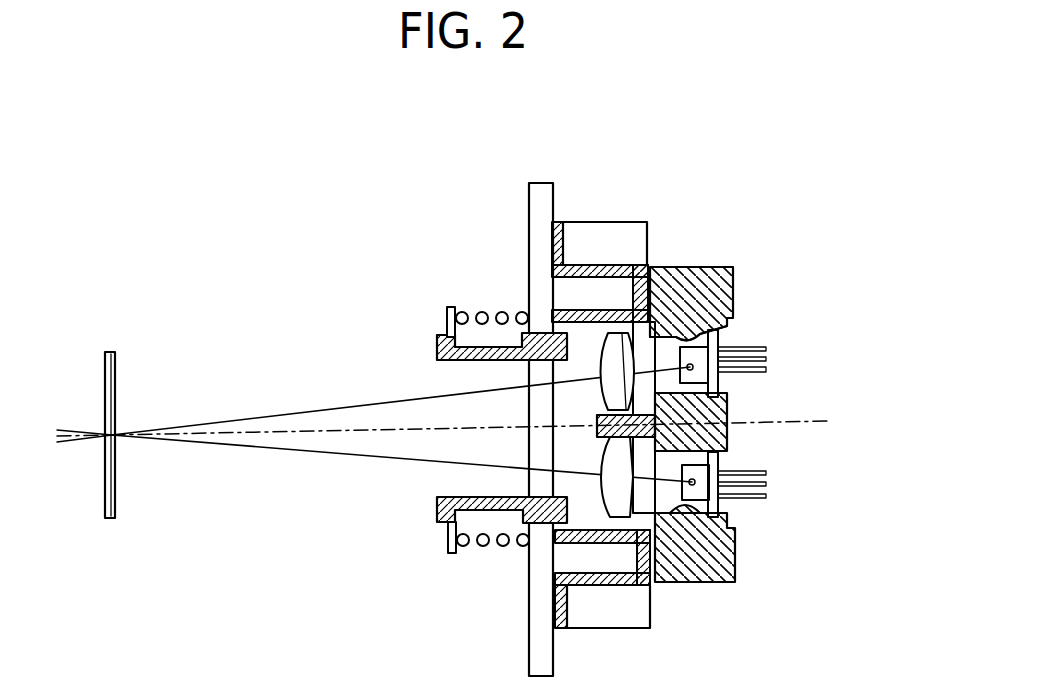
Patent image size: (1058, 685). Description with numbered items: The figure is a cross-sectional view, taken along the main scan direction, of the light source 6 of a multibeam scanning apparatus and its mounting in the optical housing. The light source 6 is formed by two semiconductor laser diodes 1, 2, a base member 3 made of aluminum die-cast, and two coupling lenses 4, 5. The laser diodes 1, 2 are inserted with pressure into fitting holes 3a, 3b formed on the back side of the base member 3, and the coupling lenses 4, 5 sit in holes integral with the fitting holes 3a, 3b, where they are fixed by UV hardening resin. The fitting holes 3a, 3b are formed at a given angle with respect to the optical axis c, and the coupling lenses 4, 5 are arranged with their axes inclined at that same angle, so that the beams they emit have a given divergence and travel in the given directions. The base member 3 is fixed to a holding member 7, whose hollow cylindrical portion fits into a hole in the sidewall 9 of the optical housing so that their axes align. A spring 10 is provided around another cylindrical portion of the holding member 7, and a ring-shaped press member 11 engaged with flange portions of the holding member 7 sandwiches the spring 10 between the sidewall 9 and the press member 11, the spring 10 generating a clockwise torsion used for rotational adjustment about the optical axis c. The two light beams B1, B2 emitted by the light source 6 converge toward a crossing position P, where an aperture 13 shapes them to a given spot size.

The semiconductor laser diode 1 is at (718, 347).
The semiconductor laser diode 2 is at (712, 470).
The base member 3 is at (715, 272).
The fitting hole 3a is at (696, 315).
The fitting hole 3b is at (737, 540).
The coupling lens 4 is at (625, 332).
The coupling lens 5 is at (617, 503).
The light source 6 is at (750, 158).
The holding member 7 is at (590, 270).
The sidewall 9 is at (528, 210).
The spring 10 is at (483, 310).
The ring-shaped press member 11 is at (445, 318).
The aperture 13 is at (105, 382).
The crossing position P is at (97, 420).
The light beam B1 is at (253, 418).
The light beam B2 is at (257, 452).
The optical axis c is at (395, 430).